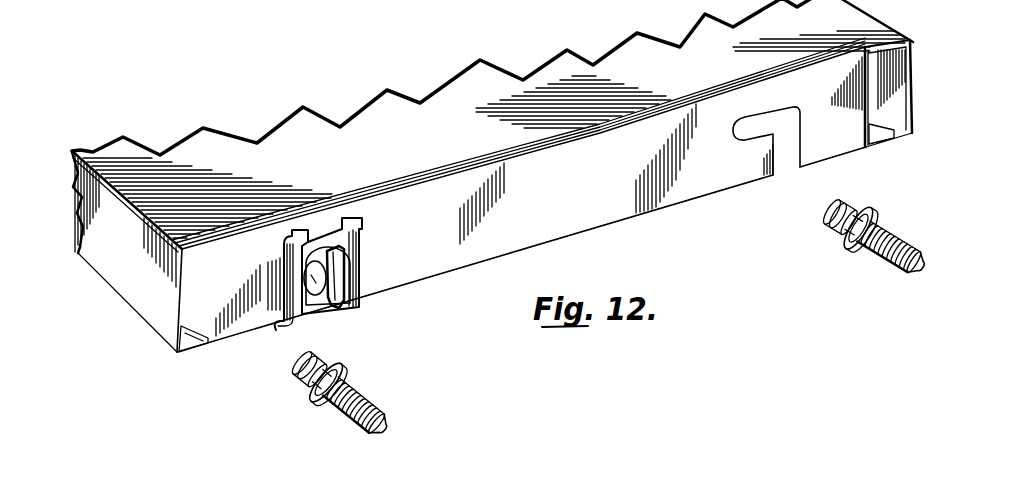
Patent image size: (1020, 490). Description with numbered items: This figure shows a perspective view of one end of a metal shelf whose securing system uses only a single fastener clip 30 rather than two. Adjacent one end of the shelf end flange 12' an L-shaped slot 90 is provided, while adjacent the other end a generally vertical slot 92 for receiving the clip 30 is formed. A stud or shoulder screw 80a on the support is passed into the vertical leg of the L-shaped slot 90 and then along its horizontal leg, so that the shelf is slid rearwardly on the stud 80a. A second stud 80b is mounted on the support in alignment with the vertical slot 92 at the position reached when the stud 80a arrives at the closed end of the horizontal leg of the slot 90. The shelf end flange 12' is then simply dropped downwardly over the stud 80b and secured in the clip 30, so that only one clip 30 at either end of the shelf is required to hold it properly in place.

The shelf end flange 12' is at (492, 176).
The fastener clip 30 is at (375, 236).
The vertical slot 92 is at (342, 273).
The L-shaped slot 90 is at (798, 133).
The stud or shoulder screw 80a is at (876, 256).
The stud 80b is at (355, 388).